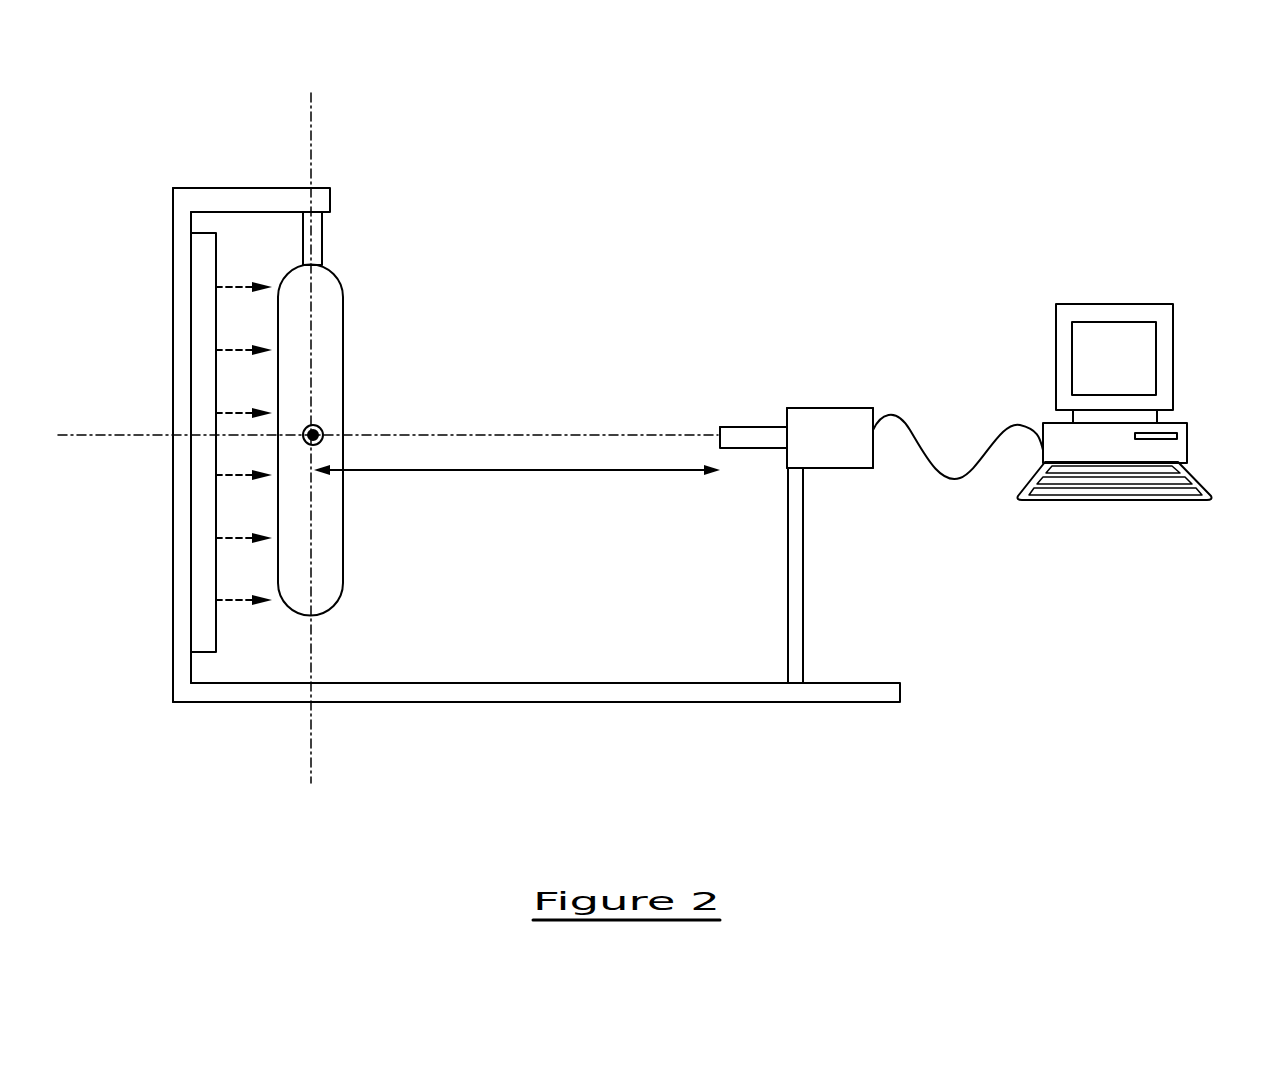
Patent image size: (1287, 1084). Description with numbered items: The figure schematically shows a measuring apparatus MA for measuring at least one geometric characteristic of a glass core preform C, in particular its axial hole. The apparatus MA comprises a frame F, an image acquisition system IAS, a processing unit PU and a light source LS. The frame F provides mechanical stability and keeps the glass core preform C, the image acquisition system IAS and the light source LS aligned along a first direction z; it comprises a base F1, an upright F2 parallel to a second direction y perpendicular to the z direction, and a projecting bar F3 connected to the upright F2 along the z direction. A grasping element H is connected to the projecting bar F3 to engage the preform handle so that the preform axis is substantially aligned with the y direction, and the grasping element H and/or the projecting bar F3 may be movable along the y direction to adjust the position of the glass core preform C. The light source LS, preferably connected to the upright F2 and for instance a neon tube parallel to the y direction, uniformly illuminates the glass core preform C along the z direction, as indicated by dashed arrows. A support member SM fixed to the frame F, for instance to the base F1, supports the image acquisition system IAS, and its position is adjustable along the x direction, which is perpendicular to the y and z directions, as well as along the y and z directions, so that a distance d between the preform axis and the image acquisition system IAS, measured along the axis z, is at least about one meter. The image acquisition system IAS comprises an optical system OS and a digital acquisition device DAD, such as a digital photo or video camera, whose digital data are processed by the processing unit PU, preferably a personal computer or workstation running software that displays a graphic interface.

The frame F is at (501, 448).
The base F1 is at (480, 703).
The upright F2 is at (173, 562).
The projecting bar F3 is at (207, 188).
The light source LS is at (216, 625).
The grasping element H is at (322, 237).
The glass core preform C is at (362, 303).
The x direction x is at (322, 423).
The y direction y is at (311, 118).
The z direction z is at (80, 433).
The distance d is at (497, 478).
The optical system OS is at (738, 422).
The digital acquisition device DAD is at (813, 408).
The image acquisition system IAS is at (855, 502).
The support member SM is at (805, 630).
The processing unit PU is at (1187, 432).
The measuring apparatus MA is at (760, 220).